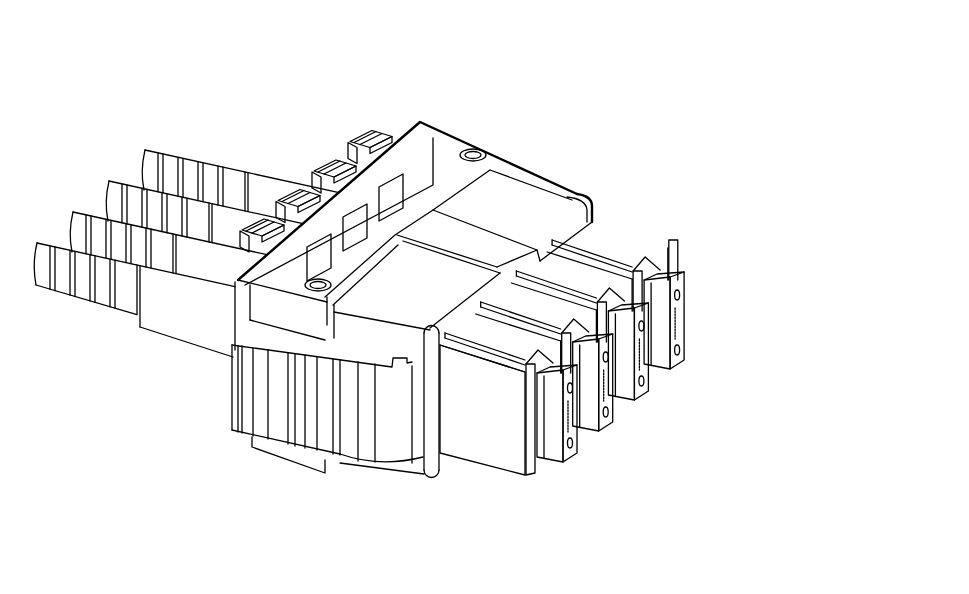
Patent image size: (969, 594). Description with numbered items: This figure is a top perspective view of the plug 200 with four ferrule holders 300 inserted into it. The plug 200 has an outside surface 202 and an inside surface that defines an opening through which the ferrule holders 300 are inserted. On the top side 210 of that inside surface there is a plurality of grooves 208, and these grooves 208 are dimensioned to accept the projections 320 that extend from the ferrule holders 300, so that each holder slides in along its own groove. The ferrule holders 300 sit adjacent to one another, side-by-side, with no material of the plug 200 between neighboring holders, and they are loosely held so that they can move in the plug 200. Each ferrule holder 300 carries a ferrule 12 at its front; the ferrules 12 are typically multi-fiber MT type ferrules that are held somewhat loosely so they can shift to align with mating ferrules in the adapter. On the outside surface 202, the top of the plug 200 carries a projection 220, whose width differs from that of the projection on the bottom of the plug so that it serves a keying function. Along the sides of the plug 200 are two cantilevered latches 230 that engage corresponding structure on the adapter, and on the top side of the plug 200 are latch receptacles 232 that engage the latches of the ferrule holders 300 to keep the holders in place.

The plug 200 is at (601, 83).
The outside surface 202 is at (487, 187).
The grooves 208 is at (565, 210).
The top side 210 is at (481, 334).
The projection 220 is at (500, 237).
The cantilevered latches 230 is at (265, 405).
The latch receptacles 232 is at (445, 158).
The ferrule holder 300 is at (497, 457).
The projections 320 is at (610, 243).
The ferrules 12 is at (619, 433).